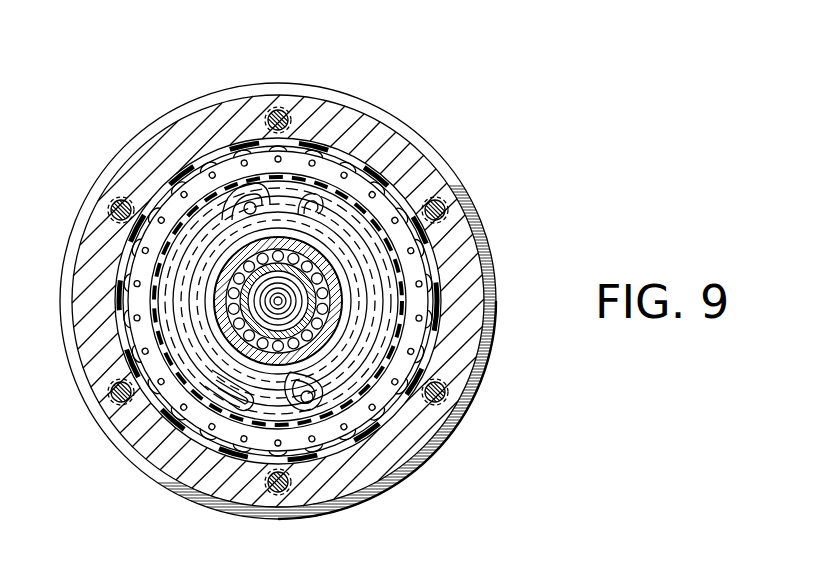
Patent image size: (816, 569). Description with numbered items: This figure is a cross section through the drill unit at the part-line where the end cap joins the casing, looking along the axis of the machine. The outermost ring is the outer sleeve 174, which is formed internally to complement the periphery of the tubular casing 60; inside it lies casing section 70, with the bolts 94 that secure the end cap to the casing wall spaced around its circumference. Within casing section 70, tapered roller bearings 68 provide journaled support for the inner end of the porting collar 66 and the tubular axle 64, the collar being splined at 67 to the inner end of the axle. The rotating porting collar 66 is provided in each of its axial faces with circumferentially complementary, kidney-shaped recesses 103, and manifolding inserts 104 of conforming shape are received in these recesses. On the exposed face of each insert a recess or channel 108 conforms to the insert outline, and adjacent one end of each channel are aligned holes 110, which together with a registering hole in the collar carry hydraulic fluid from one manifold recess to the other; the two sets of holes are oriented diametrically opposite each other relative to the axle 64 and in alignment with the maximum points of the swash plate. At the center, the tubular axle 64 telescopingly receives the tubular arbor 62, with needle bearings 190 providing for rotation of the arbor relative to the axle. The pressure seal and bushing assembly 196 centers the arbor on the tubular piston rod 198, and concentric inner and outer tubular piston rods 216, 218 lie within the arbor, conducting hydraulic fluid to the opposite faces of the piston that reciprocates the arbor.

The tubular casing 60 is at (478, 380).
The tubular arbor 62 is at (313, 297).
The tubular axle 64 is at (280, 234).
The porting collar 66 is at (233, 440).
The splines 67 is at (278, 378).
The tapered roller bearings 68 is at (472, 290).
The casing section 70 is at (468, 240).
The bolts 94 is at (284, 108).
The kidney-shaped recesses 103 is at (167, 196).
The manifolding inserts 104 is at (367, 372).
The recess or channel 108 is at (232, 162).
The aligned holes 110 is at (254, 204).
The outer sleeve 174 is at (424, 150).
The needle bearings 190 is at (222, 308).
The pressure seal and bushing assembly 196 is at (236, 367).
The tubular piston rod 198 is at (323, 356).
The inner tubular piston rod 216 is at (222, 248).
The outer tubular piston rod 218 is at (317, 255).